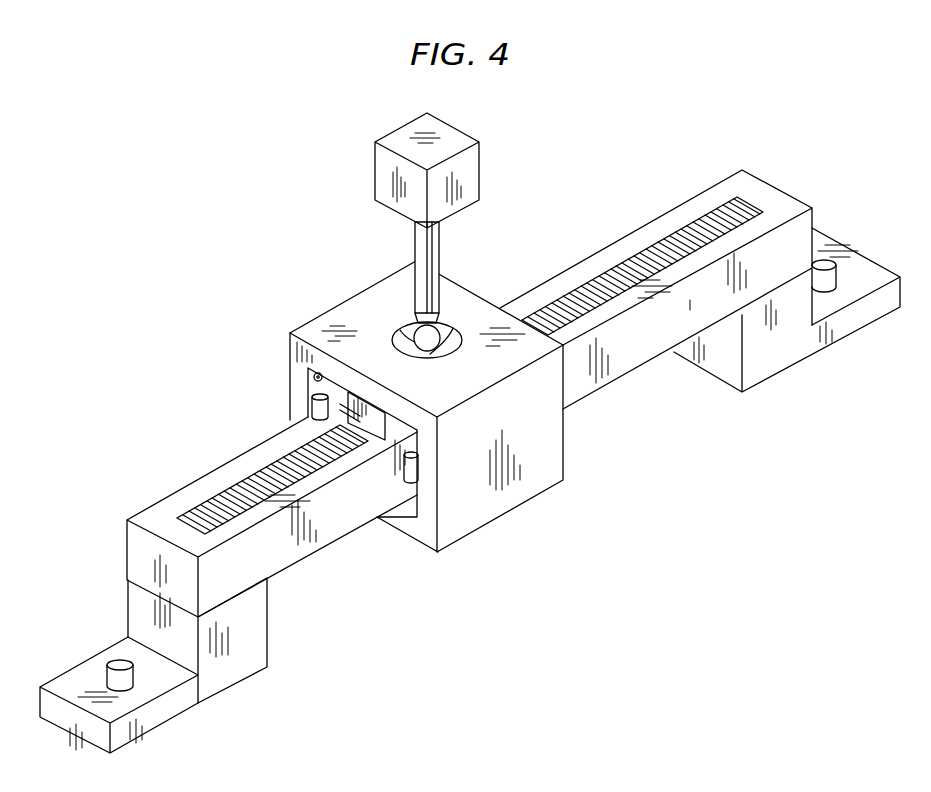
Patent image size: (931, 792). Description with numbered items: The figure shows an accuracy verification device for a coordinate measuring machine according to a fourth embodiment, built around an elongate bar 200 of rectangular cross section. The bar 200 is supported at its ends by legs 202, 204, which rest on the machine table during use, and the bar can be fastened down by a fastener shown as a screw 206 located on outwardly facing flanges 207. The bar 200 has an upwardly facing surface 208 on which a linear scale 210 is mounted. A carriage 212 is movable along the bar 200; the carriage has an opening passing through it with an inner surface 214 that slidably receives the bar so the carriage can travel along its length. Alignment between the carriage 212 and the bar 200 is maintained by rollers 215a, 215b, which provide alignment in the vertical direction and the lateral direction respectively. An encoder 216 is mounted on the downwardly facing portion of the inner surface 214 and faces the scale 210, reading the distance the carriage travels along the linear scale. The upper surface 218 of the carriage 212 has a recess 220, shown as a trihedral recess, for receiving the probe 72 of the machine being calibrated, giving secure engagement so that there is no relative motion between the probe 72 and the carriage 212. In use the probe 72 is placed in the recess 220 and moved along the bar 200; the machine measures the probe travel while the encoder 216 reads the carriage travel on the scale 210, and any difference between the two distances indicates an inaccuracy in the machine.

The probe 72 is at (408, 325).
The elongate bar 200 is at (686, 192).
The leg 202 is at (785, 352).
The leg 204 is at (230, 673).
The screw 206 is at (131, 678).
The outwardly facing flange 207 is at (70, 682).
The upwardly facing surface 208 is at (596, 263).
The linear scale 210 is at (729, 204).
The carriage 212 is at (400, 271).
The inner surface 214 is at (304, 403).
The roller 215a is at (312, 378).
The roller 215b is at (308, 414).
The encoder 216 is at (376, 395).
The upper surface 218 is at (500, 362).
The recess 220 is at (440, 350).